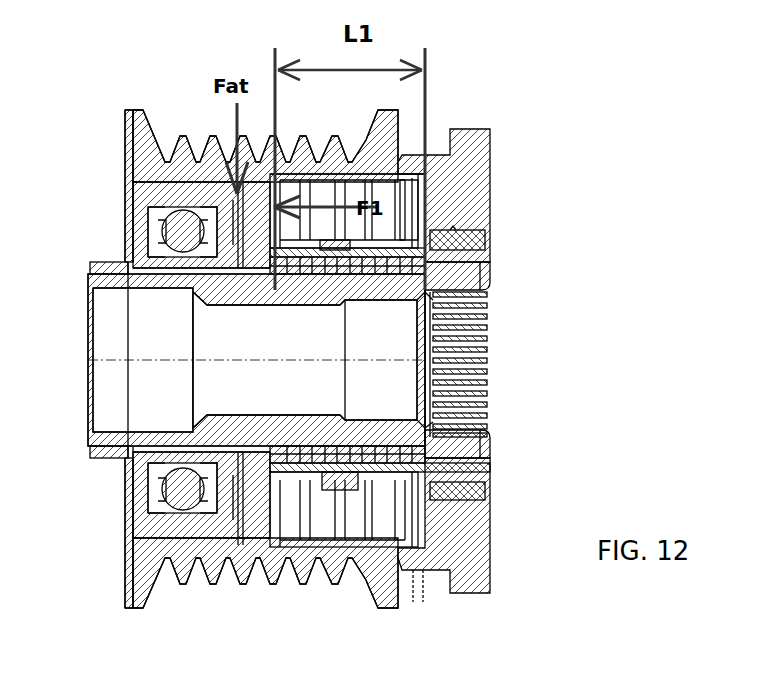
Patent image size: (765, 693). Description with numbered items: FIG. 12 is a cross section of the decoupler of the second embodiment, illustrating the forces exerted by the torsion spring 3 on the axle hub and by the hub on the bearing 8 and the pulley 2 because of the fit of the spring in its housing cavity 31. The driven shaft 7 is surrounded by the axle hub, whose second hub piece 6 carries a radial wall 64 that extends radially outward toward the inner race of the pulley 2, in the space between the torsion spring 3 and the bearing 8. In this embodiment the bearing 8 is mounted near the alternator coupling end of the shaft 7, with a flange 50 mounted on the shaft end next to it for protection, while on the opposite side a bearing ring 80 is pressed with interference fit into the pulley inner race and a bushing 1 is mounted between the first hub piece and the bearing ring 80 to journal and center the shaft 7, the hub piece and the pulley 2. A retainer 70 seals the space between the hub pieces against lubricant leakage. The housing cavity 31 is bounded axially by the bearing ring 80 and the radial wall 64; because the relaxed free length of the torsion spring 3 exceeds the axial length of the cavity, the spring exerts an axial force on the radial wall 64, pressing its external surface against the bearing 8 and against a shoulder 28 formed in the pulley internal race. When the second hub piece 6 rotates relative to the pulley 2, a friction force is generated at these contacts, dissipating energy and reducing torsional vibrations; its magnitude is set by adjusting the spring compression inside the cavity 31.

The bushing 1 is at (470, 237).
The pulley 2 is at (147, 552).
The torsion spring 3 is at (330, 520).
The second hub piece 6 is at (290, 463).
The shaft 7 is at (95, 436).
The bearing 8 is at (148, 195).
The shoulder 28 is at (238, 545).
The housing cavity 31 is at (388, 178).
The flange 50 is at (86, 271).
The radial wall 64 is at (258, 217).
The retainer 70 is at (345, 487).
The bearing ring 80 is at (470, 198).